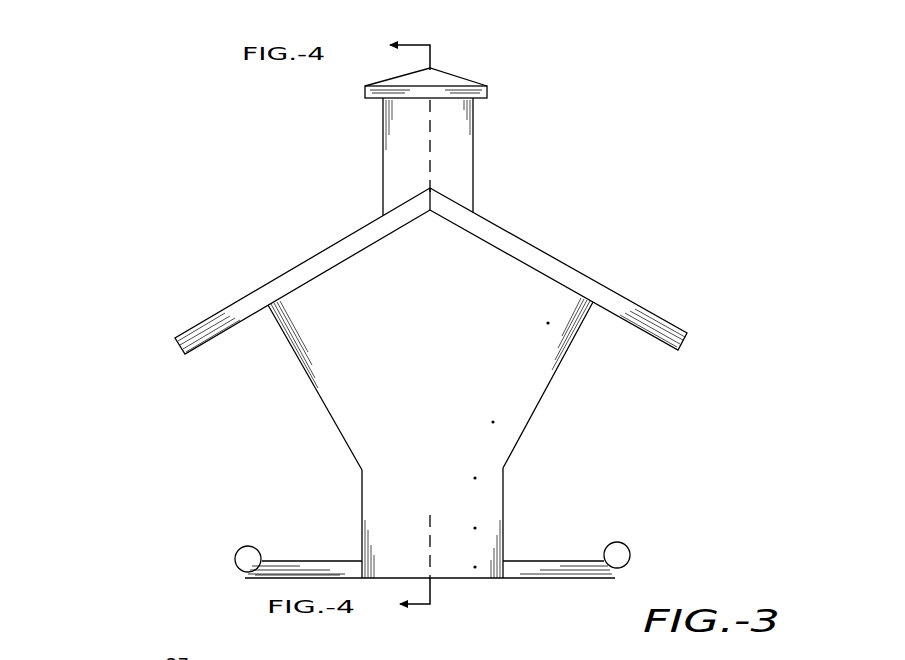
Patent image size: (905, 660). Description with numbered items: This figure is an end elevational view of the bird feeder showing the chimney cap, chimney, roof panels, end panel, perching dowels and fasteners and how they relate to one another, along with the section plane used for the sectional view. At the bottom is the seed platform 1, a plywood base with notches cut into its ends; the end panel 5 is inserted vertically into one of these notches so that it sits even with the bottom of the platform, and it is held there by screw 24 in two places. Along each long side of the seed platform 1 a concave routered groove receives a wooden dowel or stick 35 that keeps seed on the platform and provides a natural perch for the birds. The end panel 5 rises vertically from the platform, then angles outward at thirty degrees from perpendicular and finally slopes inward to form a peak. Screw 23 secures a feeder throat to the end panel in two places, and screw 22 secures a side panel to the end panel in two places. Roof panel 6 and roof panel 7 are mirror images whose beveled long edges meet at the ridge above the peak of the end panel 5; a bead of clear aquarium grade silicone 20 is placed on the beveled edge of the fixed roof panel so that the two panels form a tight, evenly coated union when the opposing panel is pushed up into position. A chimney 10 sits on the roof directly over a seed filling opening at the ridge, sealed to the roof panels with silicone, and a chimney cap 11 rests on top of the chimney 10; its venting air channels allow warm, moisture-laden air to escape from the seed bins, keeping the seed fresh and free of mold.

The seed platform 1 is at (534, 555).
The end panel 5 is at (446, 342).
The roof panel 6 is at (340, 240).
The roof panel 7 is at (525, 240).
The chimney 10 is at (382, 164).
The chimney cap 11 is at (364, 93).
The silicone 20 is at (436, 194).
The screw 22 is at (366, 422).
The screw 23 is at (389, 479).
The screw 24 is at (396, 565).
The wooden dowels or wood sticks 35 is at (634, 542).